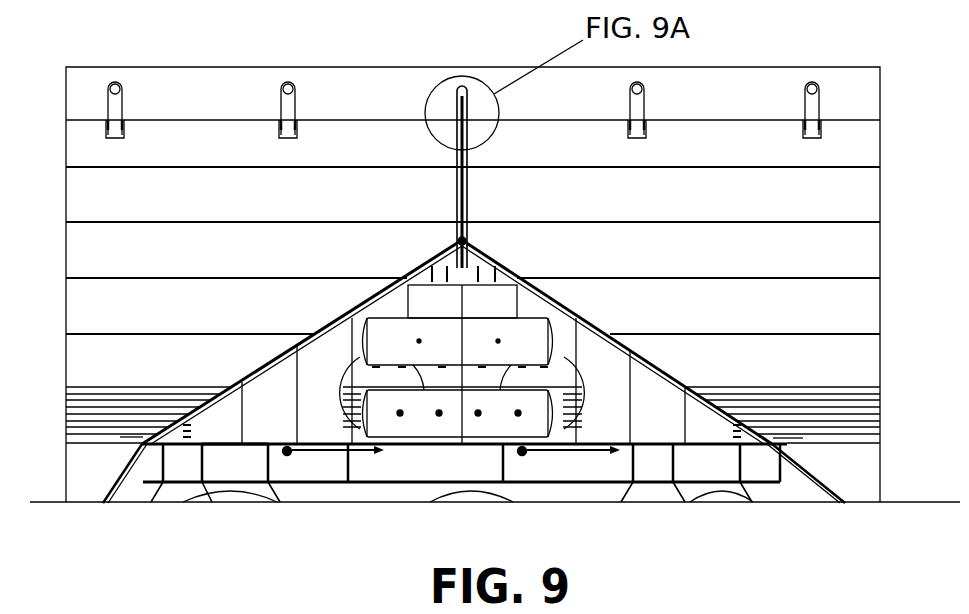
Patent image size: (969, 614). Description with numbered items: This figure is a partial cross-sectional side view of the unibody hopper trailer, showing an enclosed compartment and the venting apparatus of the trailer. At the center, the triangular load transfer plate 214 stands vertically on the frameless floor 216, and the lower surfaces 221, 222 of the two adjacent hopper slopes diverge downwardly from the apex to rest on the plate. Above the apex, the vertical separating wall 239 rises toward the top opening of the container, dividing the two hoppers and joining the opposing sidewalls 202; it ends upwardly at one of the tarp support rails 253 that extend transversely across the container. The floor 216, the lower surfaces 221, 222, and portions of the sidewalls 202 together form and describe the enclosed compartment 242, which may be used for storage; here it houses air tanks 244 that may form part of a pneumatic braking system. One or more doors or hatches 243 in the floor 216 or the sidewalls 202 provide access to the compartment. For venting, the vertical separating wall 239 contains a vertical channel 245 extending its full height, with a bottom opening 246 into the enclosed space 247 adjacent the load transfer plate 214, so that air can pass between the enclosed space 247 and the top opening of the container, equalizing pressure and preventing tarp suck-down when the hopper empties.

The sidewall 202 is at (200, 192).
The tarp support rail 253 is at (811, 84).
The vertical channel 245 is at (457, 181).
The vertical separating wall 239 is at (467, 192).
The bottom opening 246 is at (472, 262).
The lower surface of first sloping wall 221 is at (321, 352).
The lower surface of second sloping wall 222 is at (607, 352).
The load transfer plate 214 is at (661, 400).
The frameless floor 216 is at (698, 443).
The enclosed compartment 242 is at (268, 418).
The enclosed space 247 is at (203, 495).
The door or hatch 243 is at (345, 446).
The air tank 244 is at (420, 350).